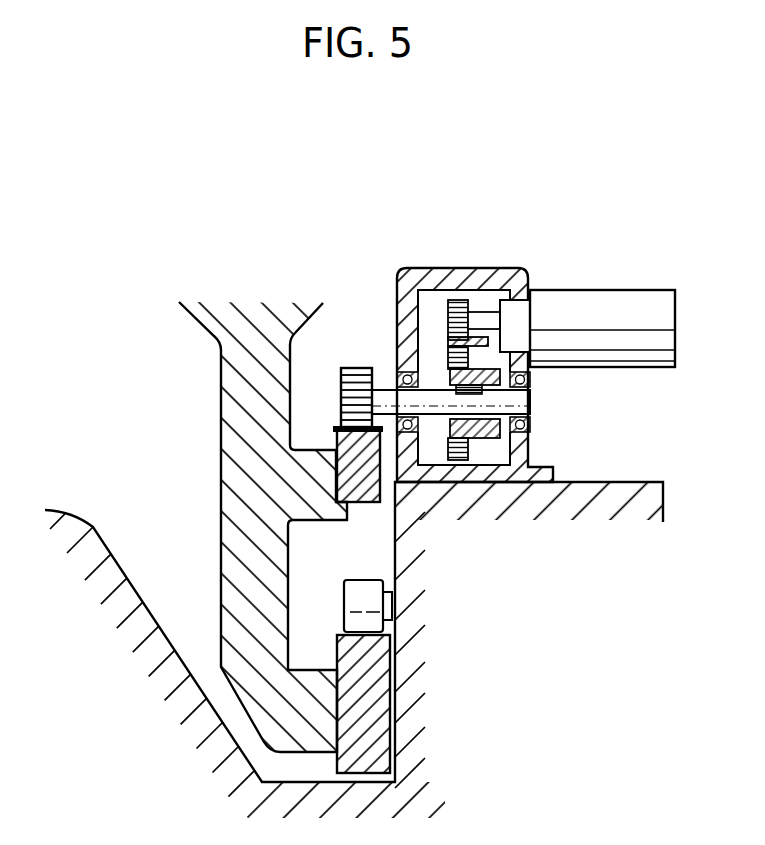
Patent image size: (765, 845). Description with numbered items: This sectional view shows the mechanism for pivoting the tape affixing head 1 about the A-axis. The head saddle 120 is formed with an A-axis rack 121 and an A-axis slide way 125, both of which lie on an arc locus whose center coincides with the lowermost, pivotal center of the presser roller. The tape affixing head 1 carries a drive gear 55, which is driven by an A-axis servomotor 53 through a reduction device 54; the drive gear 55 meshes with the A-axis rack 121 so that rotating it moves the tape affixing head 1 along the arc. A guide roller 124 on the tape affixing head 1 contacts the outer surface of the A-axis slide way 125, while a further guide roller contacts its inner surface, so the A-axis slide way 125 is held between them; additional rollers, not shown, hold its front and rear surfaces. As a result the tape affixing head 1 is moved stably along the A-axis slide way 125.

The tape affixing head 1 is at (92, 519).
The head saddle 120 is at (230, 408).
The A-axis rack 121 is at (370, 503).
The guide roller 124 is at (392, 595).
The A-axis slide way 125 is at (378, 684).
The A-axis servomotor 53 is at (600, 289).
The reduction device 54 is at (443, 267).
The drive gear 55 is at (352, 366).